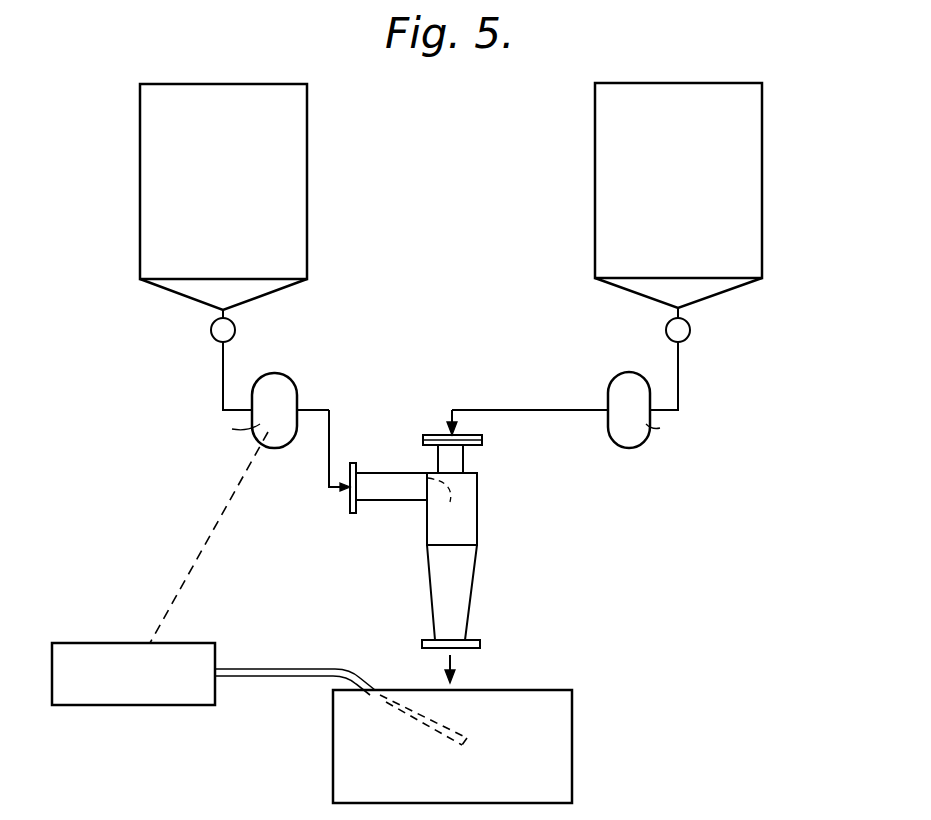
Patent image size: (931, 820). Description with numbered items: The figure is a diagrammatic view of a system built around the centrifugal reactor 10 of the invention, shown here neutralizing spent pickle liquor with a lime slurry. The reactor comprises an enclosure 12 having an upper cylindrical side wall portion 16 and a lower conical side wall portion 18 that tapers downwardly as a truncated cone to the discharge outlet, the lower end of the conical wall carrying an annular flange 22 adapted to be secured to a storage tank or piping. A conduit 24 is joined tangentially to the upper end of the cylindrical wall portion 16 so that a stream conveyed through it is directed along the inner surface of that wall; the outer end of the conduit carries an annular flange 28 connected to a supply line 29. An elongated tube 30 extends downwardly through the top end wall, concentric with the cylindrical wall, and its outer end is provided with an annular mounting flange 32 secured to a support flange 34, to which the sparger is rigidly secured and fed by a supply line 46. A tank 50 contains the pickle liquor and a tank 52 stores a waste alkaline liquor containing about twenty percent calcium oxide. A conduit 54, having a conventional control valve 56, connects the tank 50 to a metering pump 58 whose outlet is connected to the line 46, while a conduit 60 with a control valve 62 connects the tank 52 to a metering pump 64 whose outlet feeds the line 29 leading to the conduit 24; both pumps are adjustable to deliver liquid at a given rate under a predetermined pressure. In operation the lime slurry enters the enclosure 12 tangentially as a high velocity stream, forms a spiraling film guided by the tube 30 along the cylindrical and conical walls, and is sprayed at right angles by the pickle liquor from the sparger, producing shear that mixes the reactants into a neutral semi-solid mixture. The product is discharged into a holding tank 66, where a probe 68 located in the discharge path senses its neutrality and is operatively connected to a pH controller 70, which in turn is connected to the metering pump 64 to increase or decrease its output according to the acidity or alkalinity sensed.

The centrifugal reactor 10 is at (510, 498).
The enclosure 12 is at (415, 553).
The upper cylindrical side wall portion 16 is at (465, 522).
The lower conical side wall portion 18 is at (455, 574).
The annular flange 22 is at (426, 640).
The conduit 24 is at (395, 500).
The annular flange 28 is at (348, 508).
The supply line 29 is at (334, 422).
The elongated tube 30 is at (458, 465).
The annular mounting flange 32 is at (472, 450).
The support flange 34 is at (432, 437).
The supply line 46 is at (548, 410).
The tank 50 is at (748, 137).
The tank 52 is at (150, 136).
The conduit 54 is at (688, 312).
The control valve 56 is at (690, 337).
The metering pump 58 is at (632, 372).
The conduit 60 is at (220, 315).
The control valve 62 is at (238, 332).
The metering pump 64 is at (284, 374).
The holding tank 66 is at (552, 730).
The probe 68 is at (462, 730).
The pH controller 70 is at (97, 700).